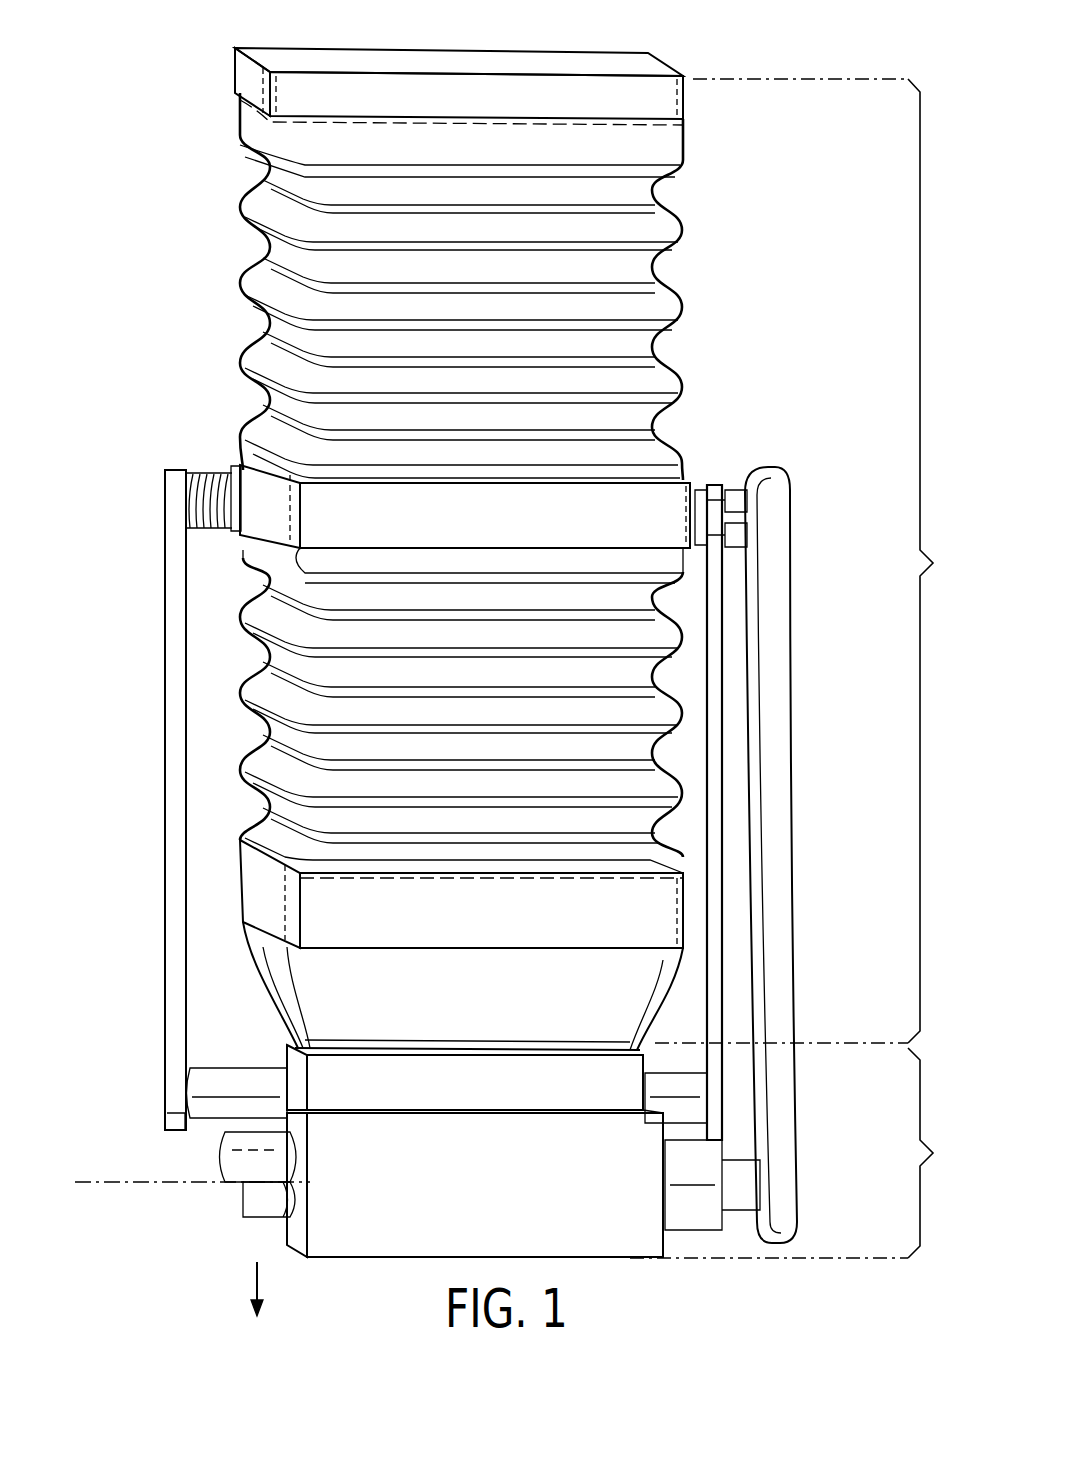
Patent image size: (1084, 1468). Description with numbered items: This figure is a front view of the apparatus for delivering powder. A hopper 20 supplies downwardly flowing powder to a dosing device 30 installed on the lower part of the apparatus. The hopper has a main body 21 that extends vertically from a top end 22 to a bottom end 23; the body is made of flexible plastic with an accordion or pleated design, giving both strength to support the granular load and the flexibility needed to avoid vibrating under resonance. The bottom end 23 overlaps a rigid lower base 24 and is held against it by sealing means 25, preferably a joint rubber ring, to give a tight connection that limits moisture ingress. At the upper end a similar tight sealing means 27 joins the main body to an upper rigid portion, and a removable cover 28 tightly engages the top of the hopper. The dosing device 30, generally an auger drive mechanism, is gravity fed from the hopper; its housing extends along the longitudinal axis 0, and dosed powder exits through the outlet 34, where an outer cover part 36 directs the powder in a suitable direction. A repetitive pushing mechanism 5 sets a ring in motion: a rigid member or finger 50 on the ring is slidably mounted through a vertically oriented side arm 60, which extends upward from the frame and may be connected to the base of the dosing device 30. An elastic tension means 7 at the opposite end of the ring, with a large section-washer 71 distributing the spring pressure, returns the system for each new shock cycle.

The removable cover 28 is at (487, 64).
The tight sealing means 27 is at (508, 141).
The top end 22 is at (550, 236).
The main body 21 is at (553, 323).
The large section-washer 71 is at (209, 430).
The elastic tension means 7 is at (162, 764).
The rigid member or finger 50 is at (725, 472).
The repetitive pushing mechanism 5 is at (818, 819).
The hopper 20 is at (833, 561).
The side arm 60 is at (780, 812).
The sealing means 25 is at (395, 894).
The rigid lower base 24 is at (395, 986).
The bottom end 23 is at (546, 794).
The dosing device 30 is at (574, 1150).
The outer cover part 36 is at (200, 1148).
The longitudinal axis 0 is at (192, 1213).
The outlet 34 is at (225, 1241).